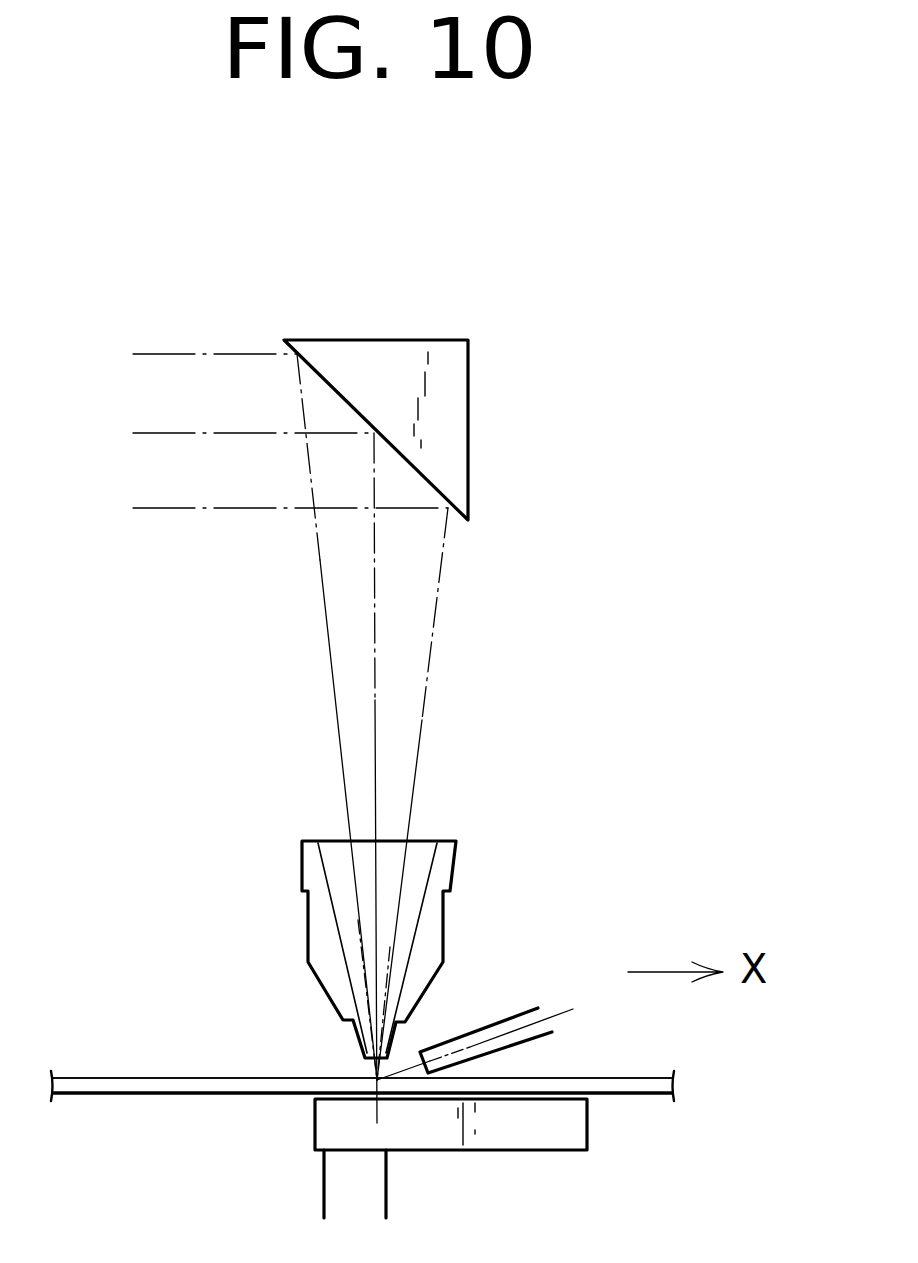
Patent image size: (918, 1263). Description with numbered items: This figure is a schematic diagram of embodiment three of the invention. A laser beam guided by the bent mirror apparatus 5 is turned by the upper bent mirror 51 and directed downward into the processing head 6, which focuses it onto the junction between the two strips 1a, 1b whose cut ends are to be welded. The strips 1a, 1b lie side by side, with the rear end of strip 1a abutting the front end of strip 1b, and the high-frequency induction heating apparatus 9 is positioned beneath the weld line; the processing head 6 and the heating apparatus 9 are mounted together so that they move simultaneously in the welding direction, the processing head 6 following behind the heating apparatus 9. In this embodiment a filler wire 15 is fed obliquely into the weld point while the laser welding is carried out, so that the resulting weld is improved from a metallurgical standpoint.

The upper bent mirror 51 is at (468, 415).
The bent mirror apparatus 5 is at (432, 642).
The processing head 6 is at (465, 828).
The filler wire 15 is at (497, 1020).
The strip 1a is at (640, 1078).
The strip 1b is at (180, 1078).
The high-frequency induction heating apparatus 9 is at (347, 1152).